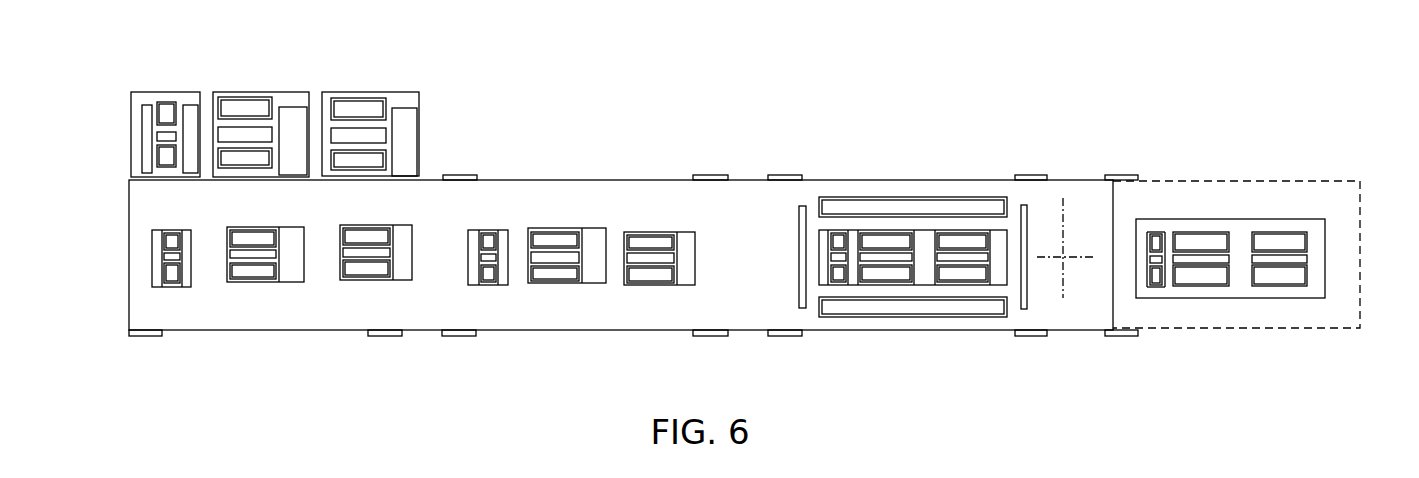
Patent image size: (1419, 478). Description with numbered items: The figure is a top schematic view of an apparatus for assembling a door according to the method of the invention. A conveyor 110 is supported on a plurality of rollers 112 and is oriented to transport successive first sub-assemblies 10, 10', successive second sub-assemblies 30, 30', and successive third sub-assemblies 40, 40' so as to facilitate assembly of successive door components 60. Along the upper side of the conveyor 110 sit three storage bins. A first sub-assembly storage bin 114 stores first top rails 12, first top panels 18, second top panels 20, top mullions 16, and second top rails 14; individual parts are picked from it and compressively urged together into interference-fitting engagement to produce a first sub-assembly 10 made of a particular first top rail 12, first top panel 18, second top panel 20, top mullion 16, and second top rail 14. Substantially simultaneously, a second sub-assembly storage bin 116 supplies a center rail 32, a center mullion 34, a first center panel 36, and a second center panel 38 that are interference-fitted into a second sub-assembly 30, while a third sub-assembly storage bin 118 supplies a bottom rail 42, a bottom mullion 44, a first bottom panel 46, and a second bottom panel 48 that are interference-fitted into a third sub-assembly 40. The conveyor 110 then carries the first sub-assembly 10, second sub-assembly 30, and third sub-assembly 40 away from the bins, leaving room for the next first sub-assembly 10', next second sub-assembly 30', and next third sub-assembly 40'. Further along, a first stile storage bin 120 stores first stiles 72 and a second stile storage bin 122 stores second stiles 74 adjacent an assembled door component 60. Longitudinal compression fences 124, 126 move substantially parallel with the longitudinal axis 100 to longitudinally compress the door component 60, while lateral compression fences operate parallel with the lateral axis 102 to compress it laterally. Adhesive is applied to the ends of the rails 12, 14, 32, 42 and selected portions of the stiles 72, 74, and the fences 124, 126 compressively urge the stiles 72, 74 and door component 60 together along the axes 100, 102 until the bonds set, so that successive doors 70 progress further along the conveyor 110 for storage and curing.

The first sub-assembly 10 is at (504, 204).
The next first sub-assembly 10' is at (173, 303).
The first top rail 12 is at (133, 124).
The second top rail 14 is at (189, 105).
The top mullion 16 is at (176, 138).
The first top panel 18 is at (166, 167).
The second top panel 20 is at (166, 102).
The second sub-assembly 30 is at (567, 208).
The next second sub-assembly 30' is at (265, 302).
The center rail 32 is at (289, 107).
The center mullion 34 is at (270, 135).
The first center panel 36 is at (249, 160).
The second center panel 38 is at (226, 100).
The third sub-assembly 40 is at (663, 202).
The next third sub-assembly 40' is at (376, 306).
The bottom rail 42 is at (410, 128).
The bottom mullion 44 is at (378, 135).
The first bottom panel 46 is at (347, 158).
The second bottom panel 48 is at (360, 100).
The door component 60 is at (817, 283).
The door 70 is at (1274, 218).
The first stile 72 is at (865, 312).
The second stile 74 is at (853, 205).
The longitudinal axis 100 is at (1083, 258).
The lateral axis 102 is at (1065, 213).
The conveyor 110 is at (644, 180).
The rollers 112 is at (440, 174).
The first sub-assembly storage bin 114 is at (155, 90).
The second sub-assembly storage bin 116 is at (262, 92).
The third sub-assembly storage bin 118 is at (395, 92).
The first stile storage bin 120 is at (968, 318).
The second stile storage bin 122 is at (940, 200).
The longitudinal compression fence 124 is at (799, 290).
The longitudinal compression fence 126 is at (1028, 288).